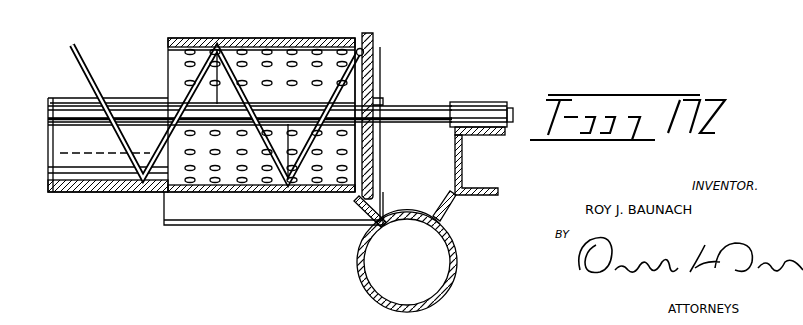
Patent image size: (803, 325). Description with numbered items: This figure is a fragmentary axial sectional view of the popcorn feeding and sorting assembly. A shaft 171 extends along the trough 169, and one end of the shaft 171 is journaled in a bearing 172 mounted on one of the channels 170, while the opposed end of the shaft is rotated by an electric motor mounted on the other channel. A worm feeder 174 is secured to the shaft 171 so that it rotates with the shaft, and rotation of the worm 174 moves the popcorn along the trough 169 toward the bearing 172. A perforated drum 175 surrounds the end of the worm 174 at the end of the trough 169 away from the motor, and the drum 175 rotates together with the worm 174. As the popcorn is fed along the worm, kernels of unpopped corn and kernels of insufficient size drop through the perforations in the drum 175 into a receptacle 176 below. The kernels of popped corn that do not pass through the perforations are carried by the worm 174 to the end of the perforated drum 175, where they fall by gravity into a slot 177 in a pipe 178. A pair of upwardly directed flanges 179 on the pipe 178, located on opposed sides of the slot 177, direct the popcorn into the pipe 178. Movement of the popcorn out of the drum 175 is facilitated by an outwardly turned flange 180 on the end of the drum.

The trough 169 is at (128, 203).
The channel 170 is at (470, 178).
The shaft 171 is at (118, 104).
The bearing 172 is at (486, 100).
The worm feeder 174 is at (86, 62).
The perforated drum 175 is at (236, 40).
The receptacle 176 is at (287, 224).
The slot 177 is at (400, 212).
The pipe 178 is at (456, 271).
The upwardly directed flange 179 is at (357, 206).
The outwardly turned flange 180 is at (374, 40).